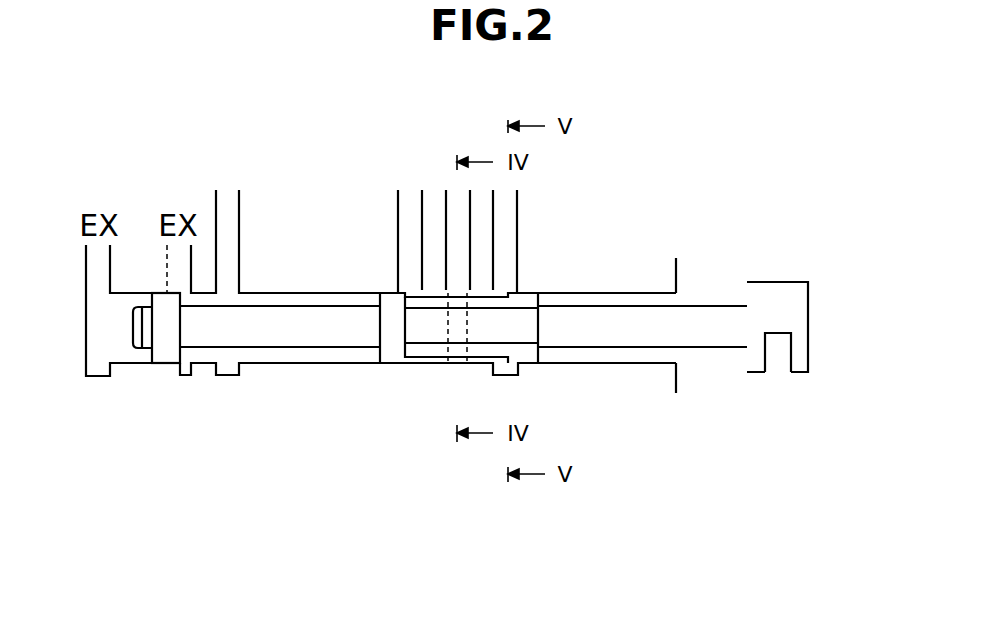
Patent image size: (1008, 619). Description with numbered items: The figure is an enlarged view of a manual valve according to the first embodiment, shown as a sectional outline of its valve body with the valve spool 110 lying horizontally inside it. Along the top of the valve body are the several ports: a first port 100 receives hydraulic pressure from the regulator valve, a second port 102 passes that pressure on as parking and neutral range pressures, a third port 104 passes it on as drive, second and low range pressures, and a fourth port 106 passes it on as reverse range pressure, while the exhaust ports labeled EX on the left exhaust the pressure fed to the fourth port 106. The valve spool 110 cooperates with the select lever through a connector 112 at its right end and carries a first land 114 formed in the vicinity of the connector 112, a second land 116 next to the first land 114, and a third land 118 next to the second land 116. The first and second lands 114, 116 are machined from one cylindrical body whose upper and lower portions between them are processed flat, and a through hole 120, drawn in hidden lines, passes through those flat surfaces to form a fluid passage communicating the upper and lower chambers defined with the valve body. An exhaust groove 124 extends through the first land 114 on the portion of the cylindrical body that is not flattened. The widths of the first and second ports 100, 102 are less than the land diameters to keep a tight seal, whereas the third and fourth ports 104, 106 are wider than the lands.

The first port 100 is at (405, 270).
The second port 102 is at (455, 268).
The third port 104 is at (513, 275).
The fourth port 106 is at (235, 277).
The valve spool 110 is at (832, 277).
The connector 112 is at (802, 363).
The first land 114 is at (528, 350).
The second land 116 is at (393, 350).
The third land 118 is at (170, 353).
The through hole 120 is at (448, 328).
The exhaust groove 124 is at (505, 343).